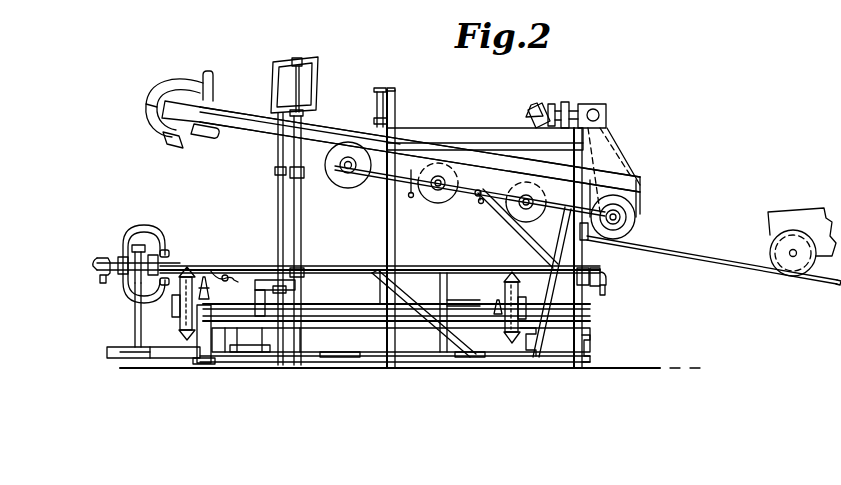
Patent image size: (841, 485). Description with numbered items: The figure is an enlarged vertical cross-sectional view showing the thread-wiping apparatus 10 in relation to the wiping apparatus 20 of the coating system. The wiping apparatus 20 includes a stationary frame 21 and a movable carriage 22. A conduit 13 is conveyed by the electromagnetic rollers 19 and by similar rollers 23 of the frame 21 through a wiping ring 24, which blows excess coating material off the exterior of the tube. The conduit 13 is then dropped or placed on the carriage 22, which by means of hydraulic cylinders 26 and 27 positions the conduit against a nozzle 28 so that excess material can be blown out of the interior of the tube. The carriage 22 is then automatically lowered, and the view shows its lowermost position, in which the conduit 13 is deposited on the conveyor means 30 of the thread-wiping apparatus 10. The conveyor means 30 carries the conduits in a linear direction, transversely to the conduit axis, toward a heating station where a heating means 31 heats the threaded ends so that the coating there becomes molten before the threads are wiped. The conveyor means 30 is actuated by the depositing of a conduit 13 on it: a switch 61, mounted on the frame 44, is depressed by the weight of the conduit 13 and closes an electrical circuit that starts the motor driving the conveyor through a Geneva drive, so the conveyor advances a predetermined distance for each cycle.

The thread-wiping apparatus 10 is at (128, 229).
The conduit 13 is at (214, 267).
The electromagnetic rollers 19 is at (779, 276).
The wiping apparatus 20 is at (333, 121).
The stationary frame 21 is at (247, 117).
The movable carriage 22 is at (341, 267).
The rollers 23 is at (432, 203).
The wiping ring 24 is at (589, 240).
The hydraulic cylinder 26 is at (303, 169).
The hydraulic cylinder 27 is at (461, 342).
The nozzle 28 is at (183, 144).
The conveyor means 30 is at (190, 265).
The heating means 31 is at (163, 237).
The frame 44 is at (195, 352).
The switch 61 is at (207, 277).